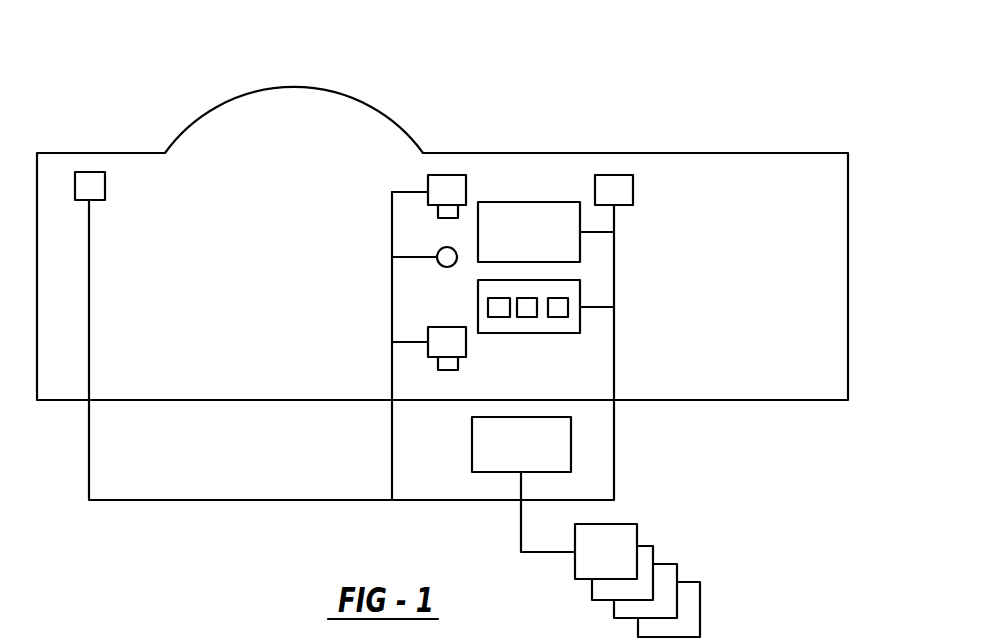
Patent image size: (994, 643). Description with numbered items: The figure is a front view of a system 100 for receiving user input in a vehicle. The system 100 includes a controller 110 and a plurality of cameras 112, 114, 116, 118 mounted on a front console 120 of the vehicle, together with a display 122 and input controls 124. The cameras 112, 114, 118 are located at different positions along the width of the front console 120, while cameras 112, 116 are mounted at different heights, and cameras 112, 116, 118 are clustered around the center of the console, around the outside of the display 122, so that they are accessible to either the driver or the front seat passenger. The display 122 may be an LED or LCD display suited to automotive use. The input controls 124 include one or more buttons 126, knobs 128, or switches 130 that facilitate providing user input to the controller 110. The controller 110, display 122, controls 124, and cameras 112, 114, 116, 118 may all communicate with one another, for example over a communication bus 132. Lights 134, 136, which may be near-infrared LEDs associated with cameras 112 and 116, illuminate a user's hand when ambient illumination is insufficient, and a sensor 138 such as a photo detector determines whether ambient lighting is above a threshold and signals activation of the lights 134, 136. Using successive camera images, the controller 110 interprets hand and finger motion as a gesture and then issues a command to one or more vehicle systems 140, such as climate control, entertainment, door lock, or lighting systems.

The system 100 is at (442, 322).
The controller 110 is at (571, 450).
The camera 112 is at (405, 156).
The camera 114 is at (105, 184).
The camera 116 is at (400, 330).
The camera 118 is at (614, 175).
The front console 120 is at (674, 190).
The display 122 is at (530, 202).
The input controls 124 is at (586, 332).
The buttons 126 is at (500, 317).
The knobs 128 is at (525, 317).
The switches 130 is at (556, 317).
The communication bus 132 is at (285, 500).
The light 134 is at (438, 212).
The light 136 is at (438, 364).
The sensor 138 is at (440, 266).
The vehicle systems 140 is at (709, 590).